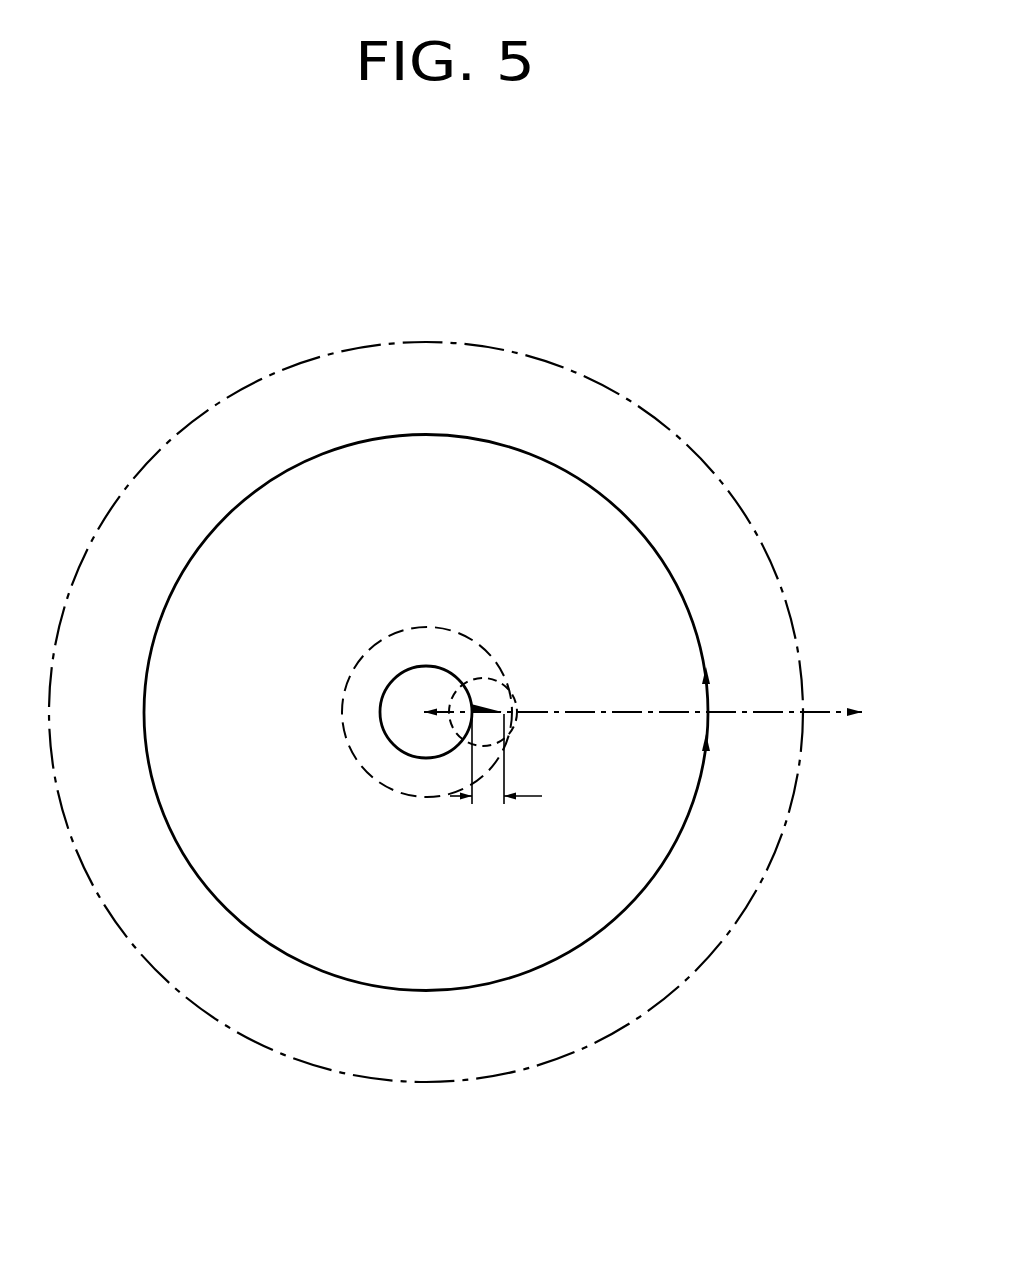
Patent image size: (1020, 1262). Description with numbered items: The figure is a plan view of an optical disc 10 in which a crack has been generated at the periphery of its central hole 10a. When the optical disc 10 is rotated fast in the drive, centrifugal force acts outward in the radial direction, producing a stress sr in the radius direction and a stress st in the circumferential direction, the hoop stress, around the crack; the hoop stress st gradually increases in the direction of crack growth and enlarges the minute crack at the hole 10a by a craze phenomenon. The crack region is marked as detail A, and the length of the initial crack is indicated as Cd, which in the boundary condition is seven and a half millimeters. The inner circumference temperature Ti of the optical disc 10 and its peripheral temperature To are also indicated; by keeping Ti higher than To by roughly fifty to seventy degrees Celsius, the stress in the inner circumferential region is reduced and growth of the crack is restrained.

The optical disc 10 is at (469, 431).
The hole 10a is at (408, 695).
The crack region A is at (513, 695).
The length of an initial crack Cd is at (496, 774).
The inner circumference temperature Ti is at (390, 766).
The peripheral temperature To is at (705, 914).
The stress in a radius direction sr is at (661, 713).
The stress in a circumferential direction (hoop stress) st is at (688, 709).